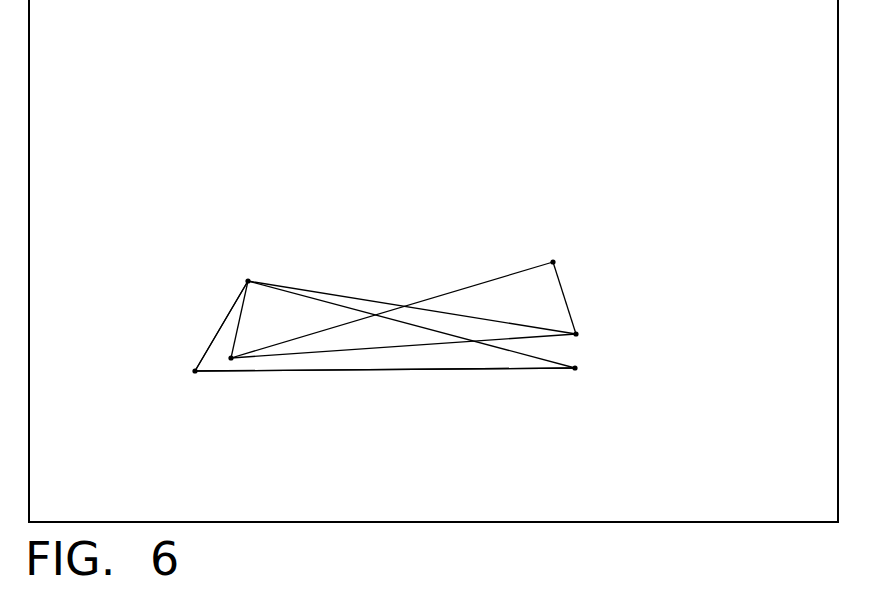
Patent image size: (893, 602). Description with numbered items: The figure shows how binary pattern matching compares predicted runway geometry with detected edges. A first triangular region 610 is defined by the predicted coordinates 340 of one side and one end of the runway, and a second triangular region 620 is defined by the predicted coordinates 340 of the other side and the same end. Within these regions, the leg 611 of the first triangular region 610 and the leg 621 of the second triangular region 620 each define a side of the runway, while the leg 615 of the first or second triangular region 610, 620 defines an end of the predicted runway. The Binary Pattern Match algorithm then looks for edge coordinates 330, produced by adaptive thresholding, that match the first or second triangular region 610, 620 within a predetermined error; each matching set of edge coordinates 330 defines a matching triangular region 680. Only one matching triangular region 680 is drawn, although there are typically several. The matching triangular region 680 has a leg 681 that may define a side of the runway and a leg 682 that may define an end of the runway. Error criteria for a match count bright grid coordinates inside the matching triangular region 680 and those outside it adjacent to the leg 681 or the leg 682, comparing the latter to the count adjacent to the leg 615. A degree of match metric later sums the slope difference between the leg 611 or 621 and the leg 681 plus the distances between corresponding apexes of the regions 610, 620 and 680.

The edge coordinates 330 is at (248, 281).
The predicted coordinates 340 is at (248, 281).
The first triangular region 610 is at (362, 278).
The leg 611 is at (240, 320).
The leg 615 is at (388, 352).
The second triangular region 620 is at (490, 255).
The leg 621 is at (563, 292).
The matching triangular region 680 is at (426, 398).
The leg 681 is at (222, 327).
The leg 682 is at (268, 372).